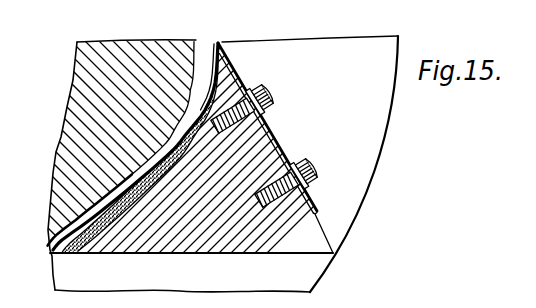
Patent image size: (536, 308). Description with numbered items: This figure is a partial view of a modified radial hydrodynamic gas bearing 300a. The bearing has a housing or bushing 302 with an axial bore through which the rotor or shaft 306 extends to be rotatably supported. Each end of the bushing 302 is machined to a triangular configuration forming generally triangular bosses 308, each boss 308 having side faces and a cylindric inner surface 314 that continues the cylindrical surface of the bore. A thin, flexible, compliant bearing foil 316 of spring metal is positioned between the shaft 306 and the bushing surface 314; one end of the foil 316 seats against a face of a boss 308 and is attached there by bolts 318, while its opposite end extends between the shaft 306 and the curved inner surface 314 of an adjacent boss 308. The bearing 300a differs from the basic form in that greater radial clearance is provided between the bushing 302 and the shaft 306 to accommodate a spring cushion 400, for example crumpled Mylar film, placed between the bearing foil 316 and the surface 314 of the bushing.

The modified radial hydrodynamic gas bearing 300a is at (377, 56).
The housing or bushing 302 is at (342, 53).
The rotor or shaft 306 is at (143, 60).
The generally triangular boss 308 is at (268, 157).
The cylindric inner surface 314 is at (117, 238).
The bearing foil 316 is at (241, 27).
The bolts 318 is at (276, 106).
The spring cushion 400 is at (63, 254).